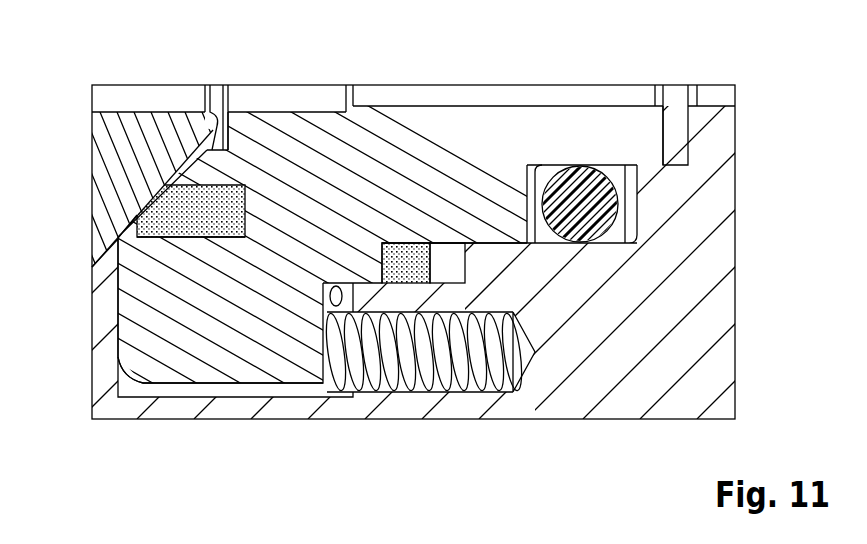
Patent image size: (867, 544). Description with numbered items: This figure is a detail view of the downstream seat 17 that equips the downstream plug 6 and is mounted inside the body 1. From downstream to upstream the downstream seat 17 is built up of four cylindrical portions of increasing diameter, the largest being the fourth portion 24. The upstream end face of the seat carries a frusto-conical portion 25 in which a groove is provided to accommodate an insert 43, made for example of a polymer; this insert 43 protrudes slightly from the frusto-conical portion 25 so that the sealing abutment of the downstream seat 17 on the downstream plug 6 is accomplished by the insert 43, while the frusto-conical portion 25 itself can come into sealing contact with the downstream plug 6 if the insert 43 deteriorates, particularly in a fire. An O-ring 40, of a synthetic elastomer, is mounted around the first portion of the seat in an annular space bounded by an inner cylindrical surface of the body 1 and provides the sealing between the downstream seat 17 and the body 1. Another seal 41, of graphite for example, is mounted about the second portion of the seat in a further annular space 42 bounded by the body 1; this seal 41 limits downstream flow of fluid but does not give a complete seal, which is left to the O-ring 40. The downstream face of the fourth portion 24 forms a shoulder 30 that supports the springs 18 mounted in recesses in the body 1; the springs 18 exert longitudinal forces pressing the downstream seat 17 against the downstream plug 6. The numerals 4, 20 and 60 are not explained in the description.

The body 1 is at (537, 405).
The cover plate 4 is at (317, 97).
The downstream plug 6 is at (112, 138).
The downstream seat 17 is at (498, 128).
The springs 18 is at (457, 387).
The housing wall 20 is at (108, 385).
The fourth cylindrical portion 24 is at (228, 355).
The frusto-conical portion 25 is at (237, 150).
The shoulder 30 is at (338, 319).
The O-ring 40 is at (622, 196).
The seal 41 is at (407, 258).
The groove 42 is at (197, 240).
The insert 43 is at (165, 207).
The flow path 60 is at (198, 170).